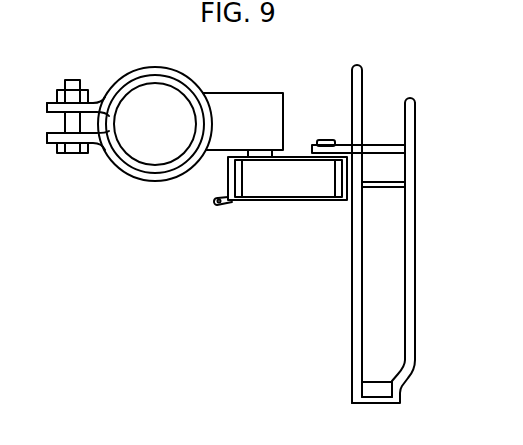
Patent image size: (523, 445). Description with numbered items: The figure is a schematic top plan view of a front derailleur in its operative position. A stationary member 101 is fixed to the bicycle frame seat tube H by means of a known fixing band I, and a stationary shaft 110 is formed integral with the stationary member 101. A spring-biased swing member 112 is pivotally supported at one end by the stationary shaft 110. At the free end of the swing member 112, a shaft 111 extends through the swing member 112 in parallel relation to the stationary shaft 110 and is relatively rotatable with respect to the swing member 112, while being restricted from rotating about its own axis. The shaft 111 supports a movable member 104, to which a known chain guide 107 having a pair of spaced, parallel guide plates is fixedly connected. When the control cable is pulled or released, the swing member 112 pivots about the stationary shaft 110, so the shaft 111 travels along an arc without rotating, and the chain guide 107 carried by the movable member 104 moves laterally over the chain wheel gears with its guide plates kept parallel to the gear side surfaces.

The stationary member 101 is at (237, 100).
The stationary shaft 110 is at (262, 152).
The shaft 111 is at (326, 138).
The swing member 112 is at (268, 188).
The movable member 104 is at (340, 147).
The chain guide 107 is at (416, 207).
The bicycle frame tube H is at (147, 171).
The fixing band I is at (178, 172).